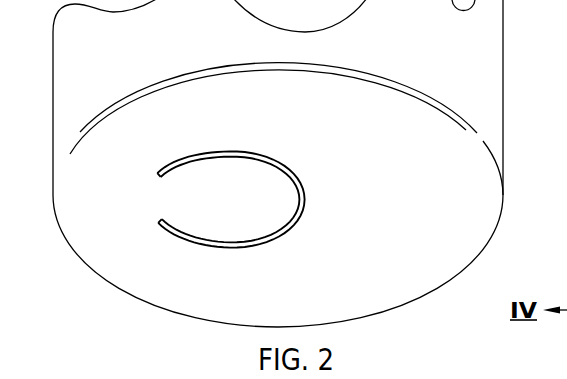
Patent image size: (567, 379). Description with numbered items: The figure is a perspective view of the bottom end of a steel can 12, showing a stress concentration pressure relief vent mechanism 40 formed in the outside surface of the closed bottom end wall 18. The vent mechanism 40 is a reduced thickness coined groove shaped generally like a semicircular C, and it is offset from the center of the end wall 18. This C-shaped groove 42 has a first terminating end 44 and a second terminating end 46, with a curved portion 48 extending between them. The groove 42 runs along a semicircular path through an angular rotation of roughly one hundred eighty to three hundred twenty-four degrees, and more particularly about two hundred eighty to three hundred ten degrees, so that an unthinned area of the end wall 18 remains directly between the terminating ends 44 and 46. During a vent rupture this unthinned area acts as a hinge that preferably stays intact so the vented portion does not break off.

The steel can 12 is at (482, 63).
The closed bottom end wall 18 is at (480, 233).
The stress concentration pressure relief vent mechanism 40 is at (193, 266).
The C-shaped groove 42 is at (298, 221).
The first terminating end 44 is at (157, 174).
The second terminating end 46 is at (158, 222).
The curved portion 48 is at (303, 195).